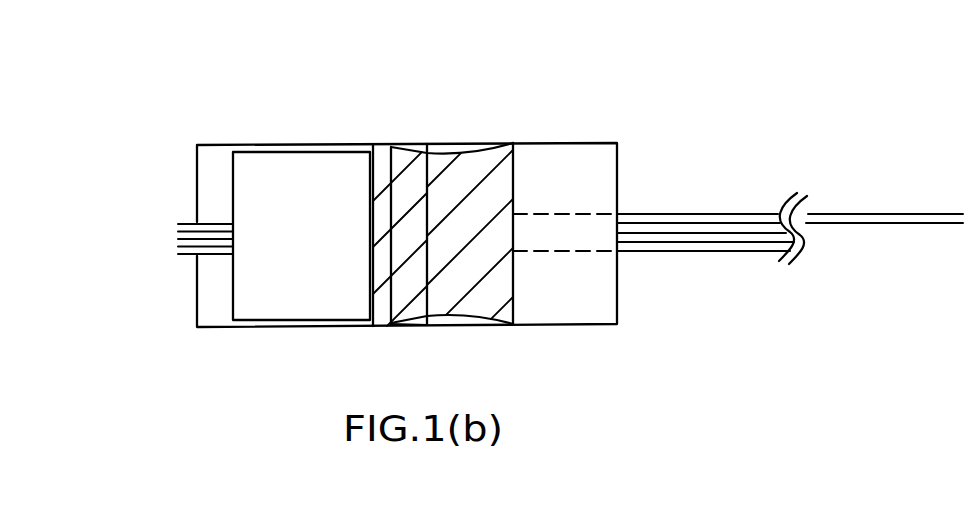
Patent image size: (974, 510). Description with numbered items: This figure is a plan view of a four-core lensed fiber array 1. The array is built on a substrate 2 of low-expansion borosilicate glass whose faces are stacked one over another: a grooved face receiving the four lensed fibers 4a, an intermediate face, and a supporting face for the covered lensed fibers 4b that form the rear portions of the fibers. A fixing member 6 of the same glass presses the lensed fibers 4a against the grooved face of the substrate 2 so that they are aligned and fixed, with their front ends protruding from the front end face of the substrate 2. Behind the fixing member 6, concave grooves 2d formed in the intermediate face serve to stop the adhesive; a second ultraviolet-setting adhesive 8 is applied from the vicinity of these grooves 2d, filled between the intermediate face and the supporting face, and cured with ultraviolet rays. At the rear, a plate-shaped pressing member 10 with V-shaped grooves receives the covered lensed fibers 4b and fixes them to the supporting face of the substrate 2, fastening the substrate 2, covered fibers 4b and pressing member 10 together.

The lensed fiber array 1 is at (595, 97).
The substrate 2 is at (214, 303).
The concave grooves 2d is at (412, 319).
The lensed fibers 4a is at (180, 222).
The covered lensed fibers 4b is at (682, 250).
The fixing member 6 is at (297, 297).
The second ultraviolet-setting adhesive 8 is at (467, 172).
The pressing member 10 is at (573, 305).